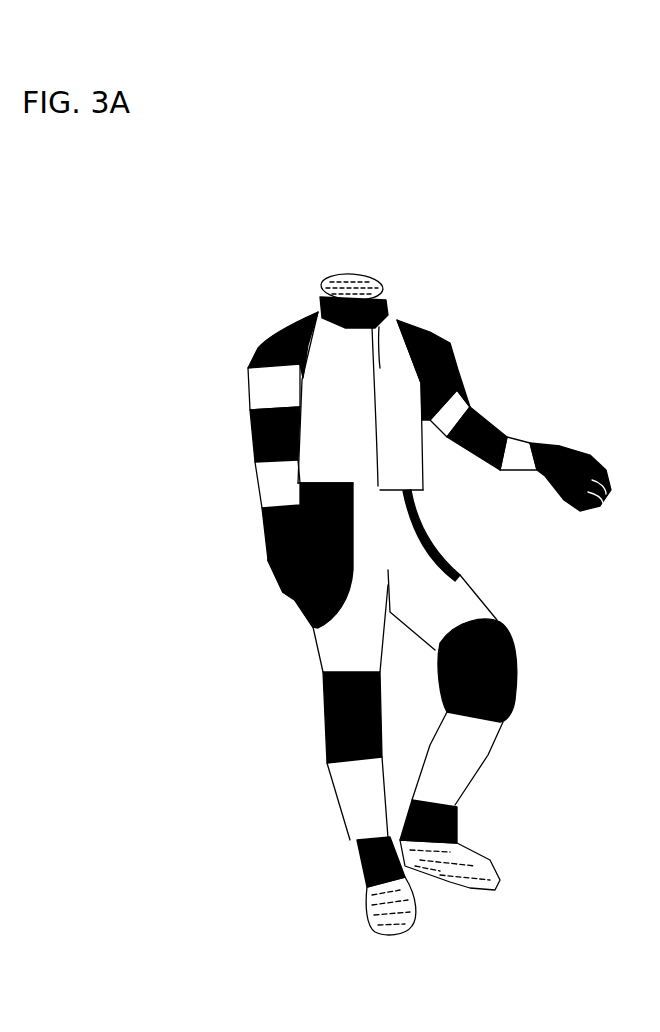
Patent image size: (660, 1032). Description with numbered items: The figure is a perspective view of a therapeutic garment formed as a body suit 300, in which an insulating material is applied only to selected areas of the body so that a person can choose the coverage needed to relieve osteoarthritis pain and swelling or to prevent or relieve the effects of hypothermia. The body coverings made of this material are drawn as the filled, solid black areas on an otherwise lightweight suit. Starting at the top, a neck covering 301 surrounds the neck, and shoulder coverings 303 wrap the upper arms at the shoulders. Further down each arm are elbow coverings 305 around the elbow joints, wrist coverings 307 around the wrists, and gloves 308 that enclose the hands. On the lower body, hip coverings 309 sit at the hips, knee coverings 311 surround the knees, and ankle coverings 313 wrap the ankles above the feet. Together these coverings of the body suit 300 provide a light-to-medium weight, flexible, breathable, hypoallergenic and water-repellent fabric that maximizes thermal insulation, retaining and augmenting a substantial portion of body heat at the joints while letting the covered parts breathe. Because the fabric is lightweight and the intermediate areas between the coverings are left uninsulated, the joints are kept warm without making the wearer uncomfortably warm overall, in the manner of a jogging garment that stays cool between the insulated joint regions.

The body suit 300 is at (370, 586).
The neck covering 301 is at (319, 291).
The shoulder coverings 303 is at (262, 342).
The elbow coverings 305 is at (250, 427).
The wrist coverings 307 is at (278, 530).
The gloves 308 is at (284, 582).
The hip coverings 309 is at (440, 536).
The knee coverings 311 is at (338, 726).
The ankle coverings 313 is at (370, 878).